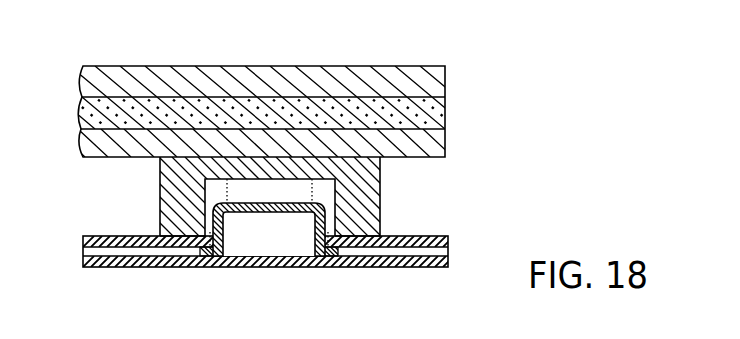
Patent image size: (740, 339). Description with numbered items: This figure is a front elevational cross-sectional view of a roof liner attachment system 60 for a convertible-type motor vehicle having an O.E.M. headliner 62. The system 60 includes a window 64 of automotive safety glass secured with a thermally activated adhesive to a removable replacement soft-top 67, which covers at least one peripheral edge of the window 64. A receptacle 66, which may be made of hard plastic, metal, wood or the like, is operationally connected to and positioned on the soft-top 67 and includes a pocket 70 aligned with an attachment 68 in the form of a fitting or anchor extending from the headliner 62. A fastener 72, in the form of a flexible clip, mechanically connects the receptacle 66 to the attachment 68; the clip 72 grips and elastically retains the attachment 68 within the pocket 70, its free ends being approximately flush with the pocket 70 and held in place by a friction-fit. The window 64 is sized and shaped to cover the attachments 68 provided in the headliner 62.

The roof liner attachment system 60 is at (505, 137).
The O.E.M. headliner 62 is at (103, 237).
The window 64 is at (447, 102).
The receptacle 66 is at (383, 203).
The replacement soft-top 67 is at (183, 66).
The attachment 68 is at (220, 258).
The pocket 70 is at (330, 201).
The fastener 72 is at (226, 191).